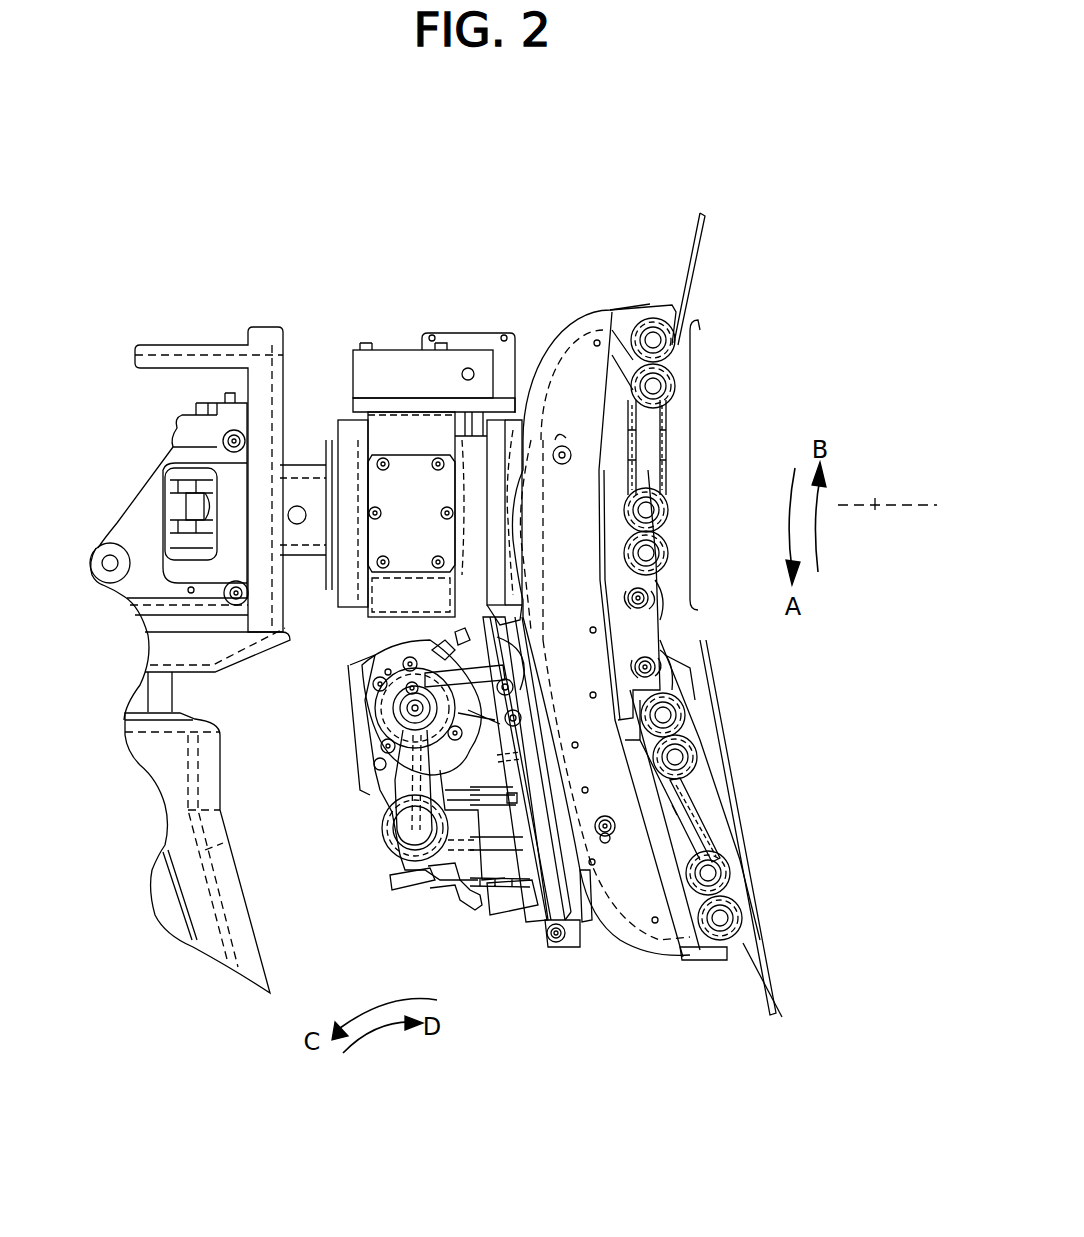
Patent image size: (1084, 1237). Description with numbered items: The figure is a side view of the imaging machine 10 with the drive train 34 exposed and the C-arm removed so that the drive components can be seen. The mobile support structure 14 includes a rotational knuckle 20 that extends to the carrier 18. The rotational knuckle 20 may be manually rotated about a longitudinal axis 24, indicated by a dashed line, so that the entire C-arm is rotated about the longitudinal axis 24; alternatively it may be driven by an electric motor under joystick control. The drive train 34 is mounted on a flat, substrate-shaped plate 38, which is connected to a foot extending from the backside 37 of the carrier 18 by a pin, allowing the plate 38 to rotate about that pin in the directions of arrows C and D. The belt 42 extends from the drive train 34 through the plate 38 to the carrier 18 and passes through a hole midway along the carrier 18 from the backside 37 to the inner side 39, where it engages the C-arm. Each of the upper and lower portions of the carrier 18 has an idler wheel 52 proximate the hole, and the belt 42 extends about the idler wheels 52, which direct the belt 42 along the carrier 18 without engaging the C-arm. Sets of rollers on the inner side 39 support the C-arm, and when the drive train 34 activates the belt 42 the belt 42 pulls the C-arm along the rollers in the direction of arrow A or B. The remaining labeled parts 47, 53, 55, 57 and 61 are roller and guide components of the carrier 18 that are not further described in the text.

The imaging machine 10 is at (116, 185).
The mobile support structure 14 is at (130, 533).
The carrier 18 is at (567, 320).
The rotational knuckle 20 is at (380, 432).
The longitudinal axis 24 is at (878, 503).
The drive train 34 is at (408, 953).
The backside 37 is at (578, 930).
The plate 38 is at (533, 893).
The inner side 39 is at (658, 633).
The belt 42 is at (767, 968).
The pivot roller 47 is at (545, 942).
The idler wheel 52 is at (658, 623).
The end block 53 is at (582, 952).
The roller 55 is at (648, 320).
The upper roller group 57 is at (690, 606).
The lower roller group 61 is at (686, 660).